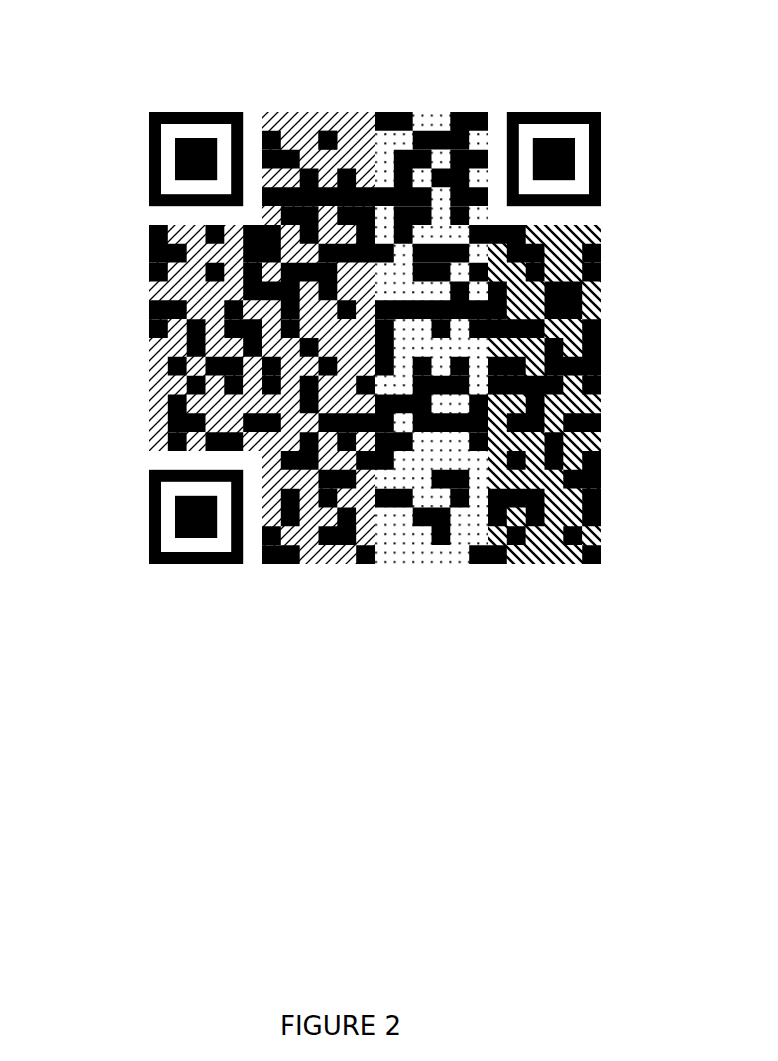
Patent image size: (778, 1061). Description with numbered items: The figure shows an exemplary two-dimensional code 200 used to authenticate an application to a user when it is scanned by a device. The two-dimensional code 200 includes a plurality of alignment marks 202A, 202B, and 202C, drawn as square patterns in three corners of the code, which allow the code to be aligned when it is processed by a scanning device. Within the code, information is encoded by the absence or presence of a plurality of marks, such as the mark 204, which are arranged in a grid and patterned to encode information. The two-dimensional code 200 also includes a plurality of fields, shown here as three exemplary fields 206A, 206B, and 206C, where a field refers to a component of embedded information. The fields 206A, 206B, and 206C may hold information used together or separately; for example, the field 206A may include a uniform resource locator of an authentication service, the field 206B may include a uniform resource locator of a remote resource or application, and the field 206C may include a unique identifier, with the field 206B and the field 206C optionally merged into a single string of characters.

The two-dimensional code 200 is at (112, 57).
The alignment mark 202A is at (149, 191).
The alignment mark 202B is at (149, 527).
The alignment mark 202C is at (601, 156).
The mark 204 is at (332, 131).
The field 206A is at (149, 388).
The field 206B is at (403, 564).
The field 206C is at (553, 564).